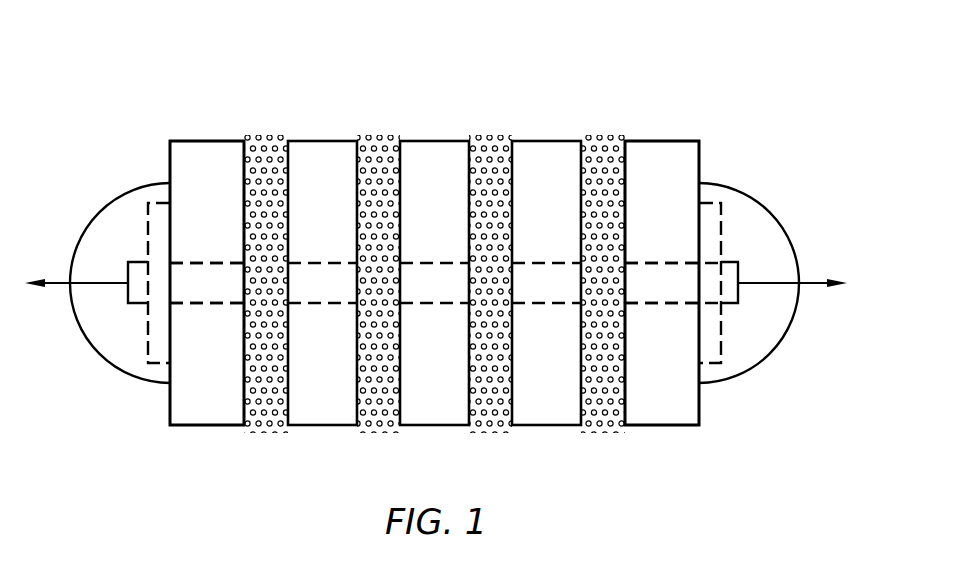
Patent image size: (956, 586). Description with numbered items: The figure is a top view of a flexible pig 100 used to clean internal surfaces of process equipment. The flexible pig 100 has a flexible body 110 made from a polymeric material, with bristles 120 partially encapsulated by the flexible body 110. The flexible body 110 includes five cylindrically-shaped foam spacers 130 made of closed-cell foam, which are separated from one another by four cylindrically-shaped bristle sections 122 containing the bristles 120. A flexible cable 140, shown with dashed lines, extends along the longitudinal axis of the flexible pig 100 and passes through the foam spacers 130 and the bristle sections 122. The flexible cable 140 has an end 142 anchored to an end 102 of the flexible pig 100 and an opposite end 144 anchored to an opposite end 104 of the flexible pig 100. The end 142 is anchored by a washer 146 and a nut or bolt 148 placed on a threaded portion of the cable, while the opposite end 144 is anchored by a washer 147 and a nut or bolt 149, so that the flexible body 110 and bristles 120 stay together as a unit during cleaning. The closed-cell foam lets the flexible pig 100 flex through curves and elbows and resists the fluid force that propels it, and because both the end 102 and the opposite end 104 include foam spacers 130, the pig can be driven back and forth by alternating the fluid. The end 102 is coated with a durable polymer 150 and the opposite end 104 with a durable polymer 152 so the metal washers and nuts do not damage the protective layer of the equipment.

The flexible pig 100 is at (152, 42).
The end 102 is at (193, 426).
The opposite end 104 is at (692, 425).
The flexible body 110 is at (697, 102).
The bristles 120 is at (267, 138).
The bristle sections 122 is at (285, 437).
The foam spacers 130 is at (677, 378).
The flexible cable 140 is at (323, 262).
The end 142 is at (172, 263).
The opposite end 144 is at (695, 263).
The washer 146 is at (128, 295).
The washer 147 is at (740, 268).
The nut or bolt 148 is at (147, 228).
The nut or bolt 149 is at (721, 338).
The durable polymer 150 is at (130, 193).
The durable polymer 152 is at (742, 192).